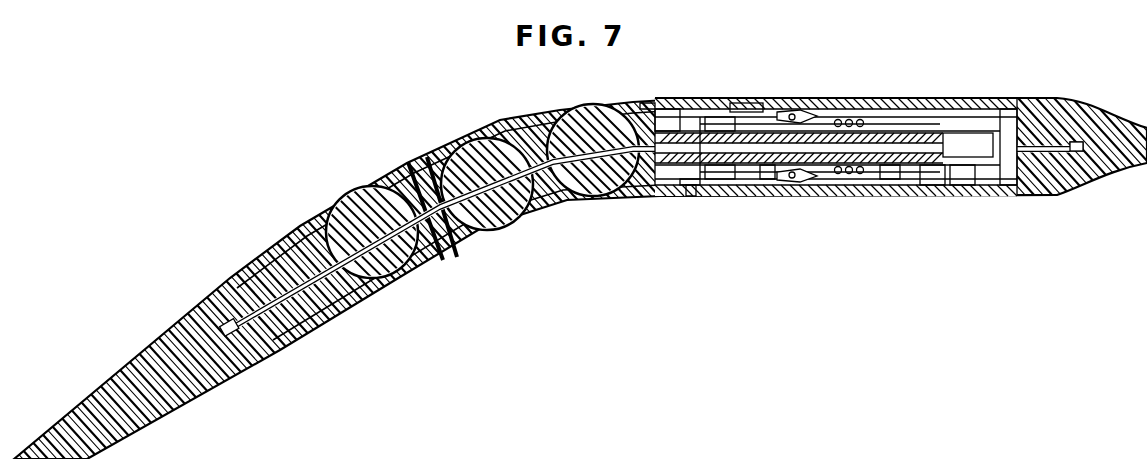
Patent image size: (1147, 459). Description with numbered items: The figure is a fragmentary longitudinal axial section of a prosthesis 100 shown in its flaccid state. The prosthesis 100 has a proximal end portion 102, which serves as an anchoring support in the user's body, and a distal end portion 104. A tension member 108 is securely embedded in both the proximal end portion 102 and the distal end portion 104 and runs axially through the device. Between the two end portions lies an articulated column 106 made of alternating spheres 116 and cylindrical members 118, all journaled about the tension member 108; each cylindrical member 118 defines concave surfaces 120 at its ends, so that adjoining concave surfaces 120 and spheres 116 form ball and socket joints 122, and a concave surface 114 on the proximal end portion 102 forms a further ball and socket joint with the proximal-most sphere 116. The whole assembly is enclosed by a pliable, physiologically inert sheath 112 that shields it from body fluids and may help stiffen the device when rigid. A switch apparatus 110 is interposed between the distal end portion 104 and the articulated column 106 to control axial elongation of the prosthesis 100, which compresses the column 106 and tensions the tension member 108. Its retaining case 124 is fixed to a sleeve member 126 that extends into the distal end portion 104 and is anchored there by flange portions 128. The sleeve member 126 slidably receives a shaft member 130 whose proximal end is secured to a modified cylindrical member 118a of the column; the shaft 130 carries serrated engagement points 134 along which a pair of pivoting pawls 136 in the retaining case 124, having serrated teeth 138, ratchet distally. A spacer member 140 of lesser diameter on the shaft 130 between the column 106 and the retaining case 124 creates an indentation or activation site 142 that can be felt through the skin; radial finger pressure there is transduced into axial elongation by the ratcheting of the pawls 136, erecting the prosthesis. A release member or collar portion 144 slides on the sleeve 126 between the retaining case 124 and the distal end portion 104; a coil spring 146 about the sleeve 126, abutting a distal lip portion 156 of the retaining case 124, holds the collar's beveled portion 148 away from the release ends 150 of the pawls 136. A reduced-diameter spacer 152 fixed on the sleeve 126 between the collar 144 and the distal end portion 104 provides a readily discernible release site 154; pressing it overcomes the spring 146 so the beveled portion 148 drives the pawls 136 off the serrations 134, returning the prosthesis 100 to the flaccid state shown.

The prosthesis 100 is at (774, 78).
The proximal end portion 102 is at (128, 367).
The distal end portion 104 is at (1106, 117).
The articulated column 106 is at (468, 136).
The tension member 108 is at (322, 296).
The switch apparatus 110 is at (830, 113).
The sheath 112 is at (636, 100).
The concave surface 114 is at (323, 213).
The spheres 116 is at (355, 207).
The cylindrical members 118 is at (528, 127).
The modified cylindrical member 118a is at (659, 106).
The concave surfaces 120 is at (438, 160).
The ball and socket joints 122 is at (563, 197).
The retaining case 124 is at (740, 96).
The sleeve member 126 is at (978, 188).
The flange portions 128 is at (1015, 194).
The shaft member 130 is at (963, 199).
The serrated engagement points 134 is at (749, 170).
The pawls 136 is at (767, 173).
The serrated teeth 138 is at (745, 165).
The spacer member 140 is at (692, 189).
The activation site 142 is at (690, 190).
The release member 144 is at (890, 176).
The coil spring 146 is at (852, 184).
The beveled portion 148 is at (806, 186).
The release ends 150 is at (800, 115).
The spring 152 is at (934, 196).
The release site 154 is at (909, 102).
The distal lip portion 156 is at (863, 110).